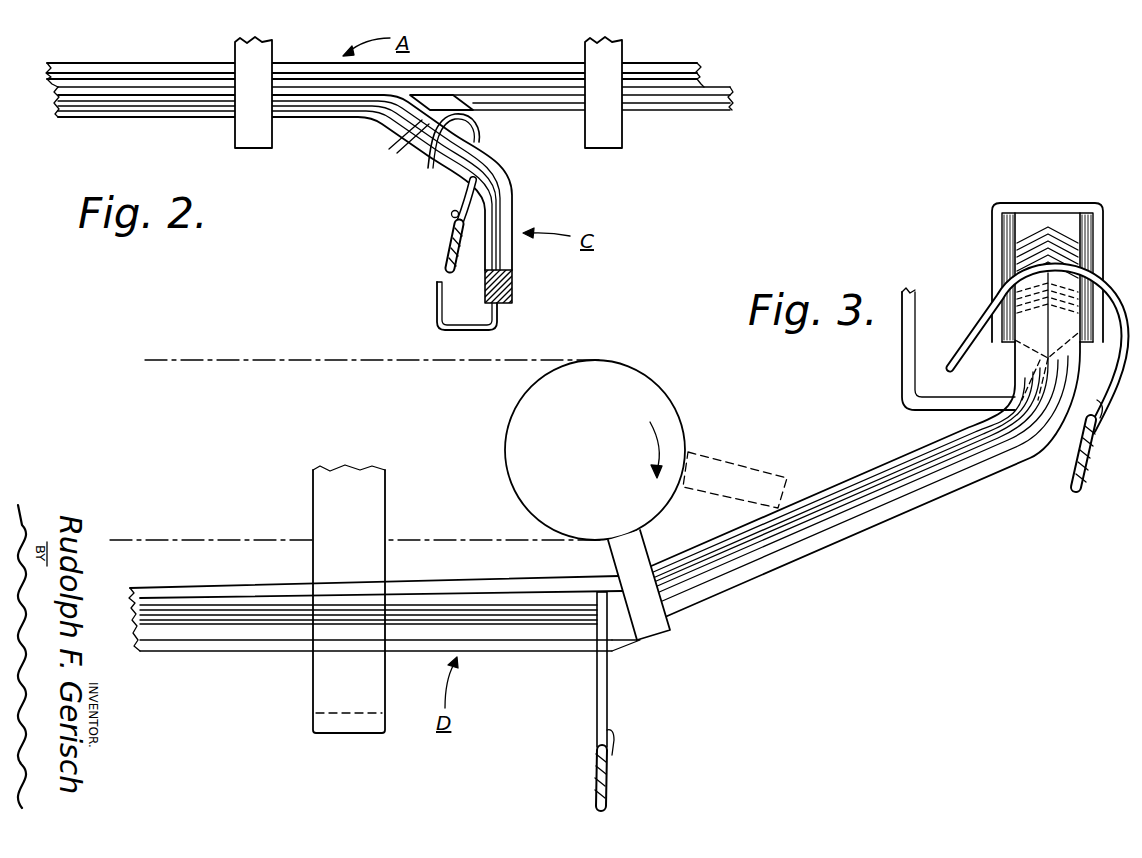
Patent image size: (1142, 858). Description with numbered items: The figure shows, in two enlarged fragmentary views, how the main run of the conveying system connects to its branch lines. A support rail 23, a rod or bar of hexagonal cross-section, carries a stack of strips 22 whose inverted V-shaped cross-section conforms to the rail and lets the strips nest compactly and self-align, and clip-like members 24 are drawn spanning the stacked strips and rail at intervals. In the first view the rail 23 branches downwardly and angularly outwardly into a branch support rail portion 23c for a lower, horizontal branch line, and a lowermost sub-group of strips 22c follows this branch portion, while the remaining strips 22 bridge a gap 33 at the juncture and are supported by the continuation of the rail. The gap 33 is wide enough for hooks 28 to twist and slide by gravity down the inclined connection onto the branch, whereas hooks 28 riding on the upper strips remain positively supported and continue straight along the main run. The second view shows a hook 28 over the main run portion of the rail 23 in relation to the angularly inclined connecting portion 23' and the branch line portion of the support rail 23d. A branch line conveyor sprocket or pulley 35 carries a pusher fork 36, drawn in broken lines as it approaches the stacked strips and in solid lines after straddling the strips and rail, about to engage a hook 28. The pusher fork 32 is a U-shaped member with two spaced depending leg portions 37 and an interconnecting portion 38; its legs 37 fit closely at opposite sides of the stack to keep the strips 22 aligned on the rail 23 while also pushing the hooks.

In FIG. 2, the strips 22 is at (104, 77).
In FIG. 3, the strips 22 is at (1066, 234).
In FIG. 2, the support rail 23 is at (393, 178).
In FIG. 3, the support rail 23 is at (1008, 340).
In FIG. 2, the clip 24 is at (262, 57).
In FIG. 3, the clip 24 is at (905, 351).
In FIG. 2, the gap 33 is at (437, 100).
In FIG. 2, the sub-group of strips 22c is at (411, 142).
In FIG. 2, the hooks 28 is at (456, 195).
In FIG. 3, the hooks 28 is at (1102, 388).
In FIG. 2, the branch support rail portion 23c is at (512, 293).
In FIG. 3, the pusher fork 32 is at (990, 211).
In FIG. 3, the interconnecting portion 38 is at (1027, 211).
In FIG. 3, the leg portions 37 is at (993, 240).
In FIG. 3, the branch line conveyor sprocket or pulley 35 is at (650, 410).
In FIG. 3, the pusher fork 36 is at (761, 475).
In FIG. 3, the angularly inclined connecting portion 23' is at (864, 445).
In FIG. 3, the branch line portion of the support rail 23d is at (250, 641).